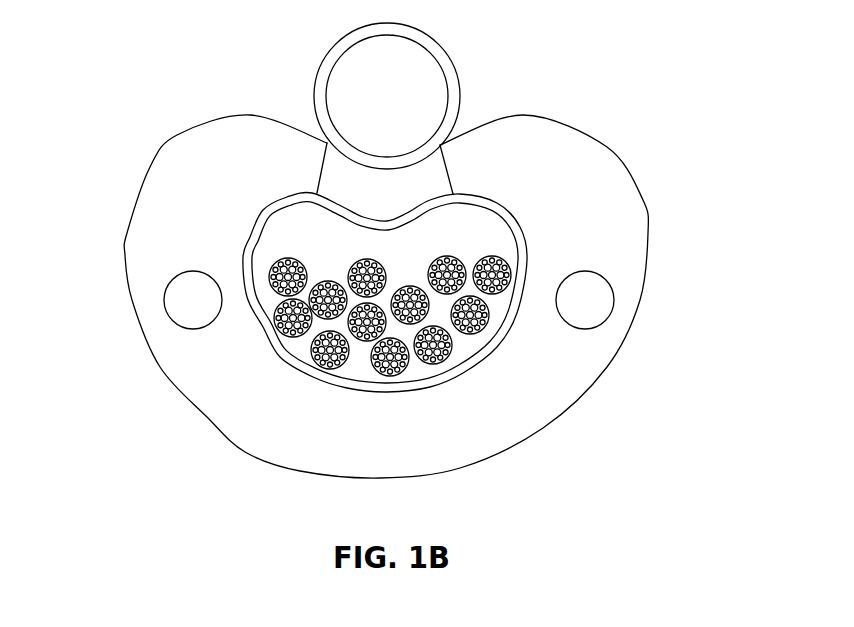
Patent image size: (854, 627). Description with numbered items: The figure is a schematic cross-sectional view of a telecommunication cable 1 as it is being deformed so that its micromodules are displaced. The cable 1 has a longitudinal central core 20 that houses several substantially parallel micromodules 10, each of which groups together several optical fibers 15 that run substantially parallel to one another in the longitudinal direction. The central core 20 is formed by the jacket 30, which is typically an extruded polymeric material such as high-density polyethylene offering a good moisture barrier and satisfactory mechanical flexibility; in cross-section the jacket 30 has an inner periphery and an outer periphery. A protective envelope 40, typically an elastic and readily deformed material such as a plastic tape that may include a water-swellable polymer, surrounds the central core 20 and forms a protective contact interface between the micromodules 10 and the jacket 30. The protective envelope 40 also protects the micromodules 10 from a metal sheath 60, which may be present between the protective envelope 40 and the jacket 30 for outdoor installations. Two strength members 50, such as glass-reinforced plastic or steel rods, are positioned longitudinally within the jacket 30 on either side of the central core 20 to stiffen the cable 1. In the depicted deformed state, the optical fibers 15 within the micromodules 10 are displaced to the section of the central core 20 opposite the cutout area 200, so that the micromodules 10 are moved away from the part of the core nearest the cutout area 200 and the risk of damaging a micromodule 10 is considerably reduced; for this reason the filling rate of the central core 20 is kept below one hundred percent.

The telecommunication cable 1 is at (381, 273).
The micromodule 10 is at (297, 352).
The optical fibers 15 is at (323, 365).
The central core 20 is at (300, 240).
The jacket 30 is at (523, 417).
The protective envelope 40 is at (522, 248).
The strength members 50 is at (167, 288).
The metal sheath 60 is at (520, 222).
The cutout area 200 is at (400, 183).